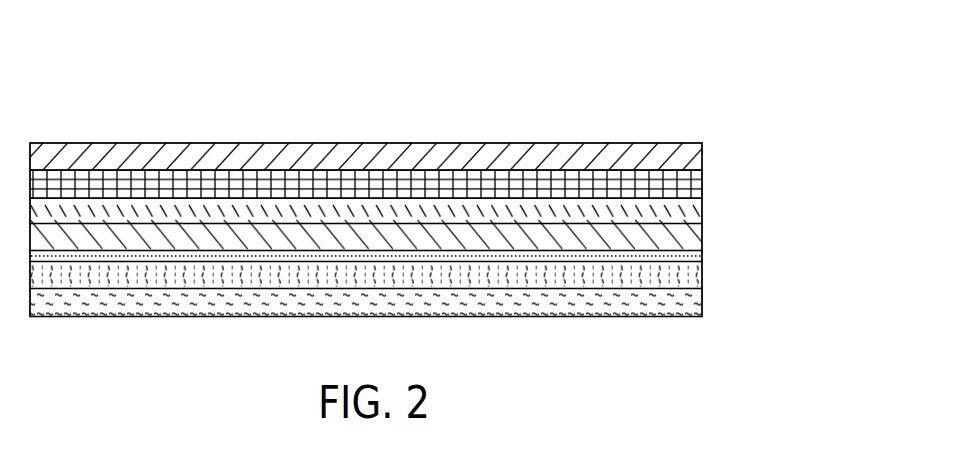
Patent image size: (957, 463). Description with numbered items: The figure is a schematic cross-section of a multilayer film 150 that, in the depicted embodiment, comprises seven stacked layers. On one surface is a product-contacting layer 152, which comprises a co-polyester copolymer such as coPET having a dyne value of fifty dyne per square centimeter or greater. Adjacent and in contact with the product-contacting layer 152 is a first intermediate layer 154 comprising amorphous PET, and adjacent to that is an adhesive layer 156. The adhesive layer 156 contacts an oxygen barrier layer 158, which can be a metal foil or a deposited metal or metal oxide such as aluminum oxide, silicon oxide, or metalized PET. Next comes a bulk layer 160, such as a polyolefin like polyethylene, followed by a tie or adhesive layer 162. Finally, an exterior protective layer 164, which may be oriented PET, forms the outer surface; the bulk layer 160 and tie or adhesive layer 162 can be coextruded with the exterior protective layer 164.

The multilayer film 150 is at (541, 112).
The product-contacting layer 152 is at (697, 307).
The first intermediate layer 154 is at (697, 277).
The adhesive layer 156 is at (697, 255).
The oxygen barrier layer 158 is at (702, 231).
The bulk layer 160 is at (696, 208).
The tie or adhesive layer 162 is at (697, 180).
The exterior protective layer 164 is at (702, 147).